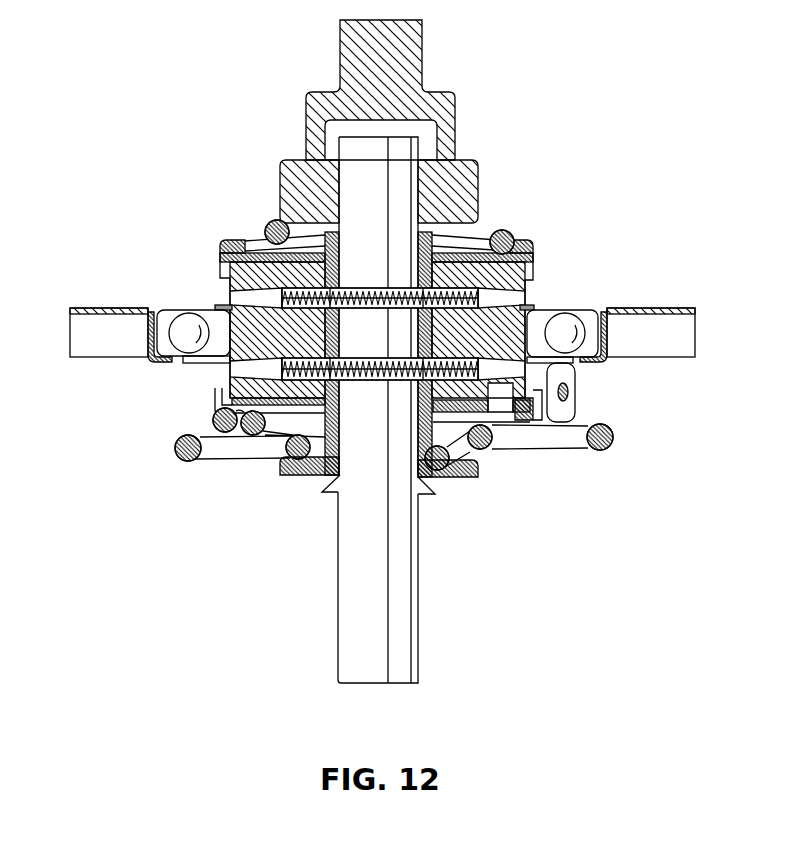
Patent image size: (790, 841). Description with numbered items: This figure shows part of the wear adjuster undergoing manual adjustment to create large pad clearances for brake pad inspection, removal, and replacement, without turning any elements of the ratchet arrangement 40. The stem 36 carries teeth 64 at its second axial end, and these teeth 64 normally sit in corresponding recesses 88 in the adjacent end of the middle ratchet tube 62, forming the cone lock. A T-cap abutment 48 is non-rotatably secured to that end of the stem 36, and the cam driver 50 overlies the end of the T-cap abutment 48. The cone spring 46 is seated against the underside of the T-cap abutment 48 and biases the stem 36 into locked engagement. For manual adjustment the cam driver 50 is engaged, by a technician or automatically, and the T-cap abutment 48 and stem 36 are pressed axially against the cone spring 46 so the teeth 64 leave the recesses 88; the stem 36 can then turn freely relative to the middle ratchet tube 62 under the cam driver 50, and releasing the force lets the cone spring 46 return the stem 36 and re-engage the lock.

The stem 36 is at (338, 590).
The ratchet arrangement 40 is at (224, 297).
The cone spring 46 is at (507, 233).
The T-cap abutment 48 is at (480, 180).
The cam driver 50 is at (427, 50).
The middle ratchet tube 62 is at (480, 300).
The teeth 64 is at (432, 496).
The recesses 88 is at (322, 474).